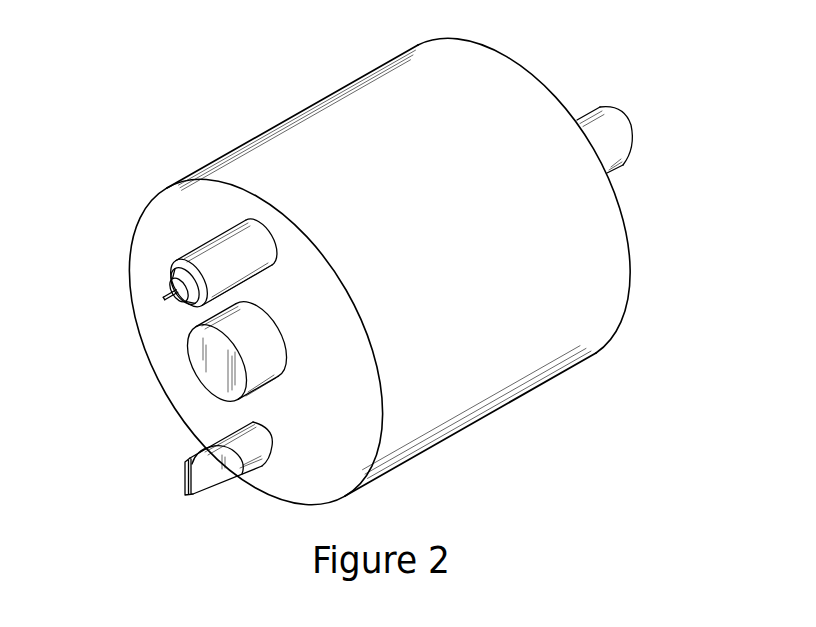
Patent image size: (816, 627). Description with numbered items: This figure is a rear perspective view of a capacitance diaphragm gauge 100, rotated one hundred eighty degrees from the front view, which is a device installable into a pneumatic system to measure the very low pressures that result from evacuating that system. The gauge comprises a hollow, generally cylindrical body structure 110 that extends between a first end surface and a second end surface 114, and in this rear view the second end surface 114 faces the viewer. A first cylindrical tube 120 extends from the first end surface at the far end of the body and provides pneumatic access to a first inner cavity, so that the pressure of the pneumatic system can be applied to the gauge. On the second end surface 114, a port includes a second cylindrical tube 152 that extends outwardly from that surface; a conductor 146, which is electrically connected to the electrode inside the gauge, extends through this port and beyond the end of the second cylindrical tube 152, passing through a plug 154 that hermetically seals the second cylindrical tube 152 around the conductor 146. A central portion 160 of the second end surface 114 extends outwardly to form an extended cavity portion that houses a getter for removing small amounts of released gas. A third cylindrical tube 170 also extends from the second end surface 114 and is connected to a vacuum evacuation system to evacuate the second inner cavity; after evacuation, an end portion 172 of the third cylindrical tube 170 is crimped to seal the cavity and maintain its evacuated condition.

The capacitance diaphragm gauge 100 is at (404, 293).
The cylindrical body structure 110 is at (353, 293).
The second end surface 114 is at (307, 480).
The first cylindrical tube 120 is at (600, 127).
The conductor 146 is at (167, 288).
The second cylindrical tube 152 is at (200, 257).
The plug 154 is at (172, 267).
The central portion 160 is at (205, 350).
The third cylindrical tube 170 is at (188, 471).
The end portion 172 is at (200, 478).